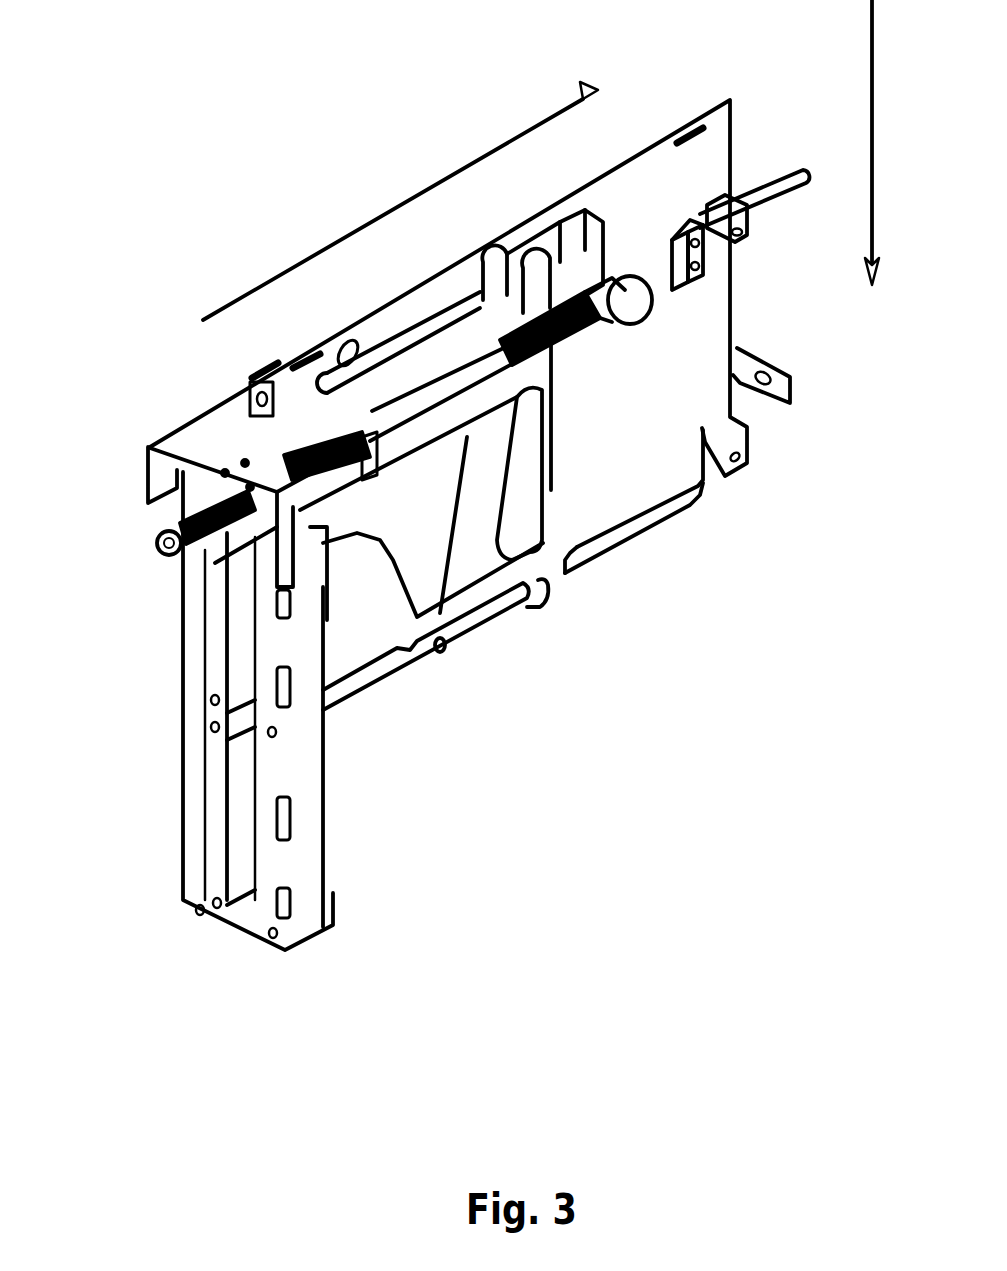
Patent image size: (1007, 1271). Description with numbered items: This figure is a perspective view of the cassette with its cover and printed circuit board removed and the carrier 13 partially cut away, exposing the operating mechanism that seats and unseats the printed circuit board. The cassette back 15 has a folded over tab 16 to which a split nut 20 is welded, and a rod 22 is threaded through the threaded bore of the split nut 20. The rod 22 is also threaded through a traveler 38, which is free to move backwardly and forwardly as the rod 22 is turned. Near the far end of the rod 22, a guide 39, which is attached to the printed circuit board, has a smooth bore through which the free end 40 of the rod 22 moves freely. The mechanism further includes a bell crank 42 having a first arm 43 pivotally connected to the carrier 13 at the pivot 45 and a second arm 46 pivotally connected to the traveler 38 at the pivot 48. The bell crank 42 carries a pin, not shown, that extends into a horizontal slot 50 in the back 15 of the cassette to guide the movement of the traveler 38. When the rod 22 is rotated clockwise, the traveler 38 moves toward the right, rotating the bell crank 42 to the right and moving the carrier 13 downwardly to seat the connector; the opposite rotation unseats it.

The carrier 13 is at (303, 863).
The back 15 is at (733, 307).
The folded over tab 16 is at (203, 447).
The split nut 20 is at (240, 535).
The rod 22 is at (392, 413).
The traveler 38 is at (627, 303).
The guide 39 is at (683, 228).
The free end 40 is at (798, 178).
The bell crank 42 is at (458, 637).
The first arm 43 is at (497, 622).
The pivotal connection 45 is at (545, 594).
The second arm 46 is at (473, 480).
The pivotal connection 48 is at (488, 262).
The horizontal slot 50 is at (407, 347).